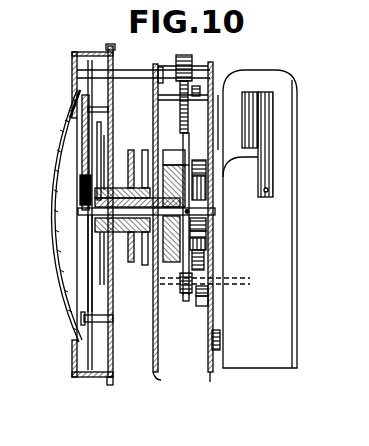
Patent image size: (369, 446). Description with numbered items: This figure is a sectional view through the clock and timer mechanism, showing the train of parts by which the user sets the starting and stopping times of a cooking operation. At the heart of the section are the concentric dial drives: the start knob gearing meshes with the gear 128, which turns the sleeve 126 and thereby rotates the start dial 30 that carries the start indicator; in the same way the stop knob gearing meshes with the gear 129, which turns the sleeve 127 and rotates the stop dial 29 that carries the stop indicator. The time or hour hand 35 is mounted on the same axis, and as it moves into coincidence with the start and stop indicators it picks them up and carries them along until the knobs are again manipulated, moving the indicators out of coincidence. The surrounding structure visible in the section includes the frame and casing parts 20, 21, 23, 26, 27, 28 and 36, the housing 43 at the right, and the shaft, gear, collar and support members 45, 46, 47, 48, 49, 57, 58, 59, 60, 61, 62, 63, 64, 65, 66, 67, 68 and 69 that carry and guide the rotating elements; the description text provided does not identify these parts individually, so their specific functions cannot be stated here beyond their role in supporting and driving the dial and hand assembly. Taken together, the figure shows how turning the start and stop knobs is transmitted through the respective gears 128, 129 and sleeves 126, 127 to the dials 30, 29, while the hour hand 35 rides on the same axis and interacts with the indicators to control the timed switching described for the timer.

The pin 20 is at (112, 382).
The frame plate 21 is at (211, 372).
The frame plate 23 is at (158, 374).
The housing 26 is at (101, 52).
The leaf spring 27 is at (56, 216).
The spring arm 28 is at (80, 95).
The stop dial 29 is at (105, 140).
The start dial 30 is at (101, 125).
The hour hand 35 is at (82, 190).
The spring 36 is at (63, 141).
The housing 43 is at (287, 206).
The axis line 45 is at (218, 286).
The collar 46 is at (209, 300).
The collar 47 is at (208, 320).
The shaft 48 is at (187, 301).
The gear 49 is at (205, 264).
The gear 57 is at (206, 168).
The gear 58 is at (207, 245).
The shaft 59 is at (215, 211).
The gear 60 is at (207, 190).
The shaft 61 is at (129, 71).
The gear 62 is at (192, 62).
The cross member 63 is at (200, 91).
The gear shaft 64 is at (188, 131).
The spacer 65 is at (207, 234).
The gear 66 is at (207, 226).
The column 67 is at (180, 136).
The gear 68 is at (178, 293).
The rod 69 is at (92, 242).
The sleeve 126 is at (131, 262).
The sleeve 127 is at (124, 186).
The gear 128 is at (145, 265).
The gear 129 is at (140, 170).